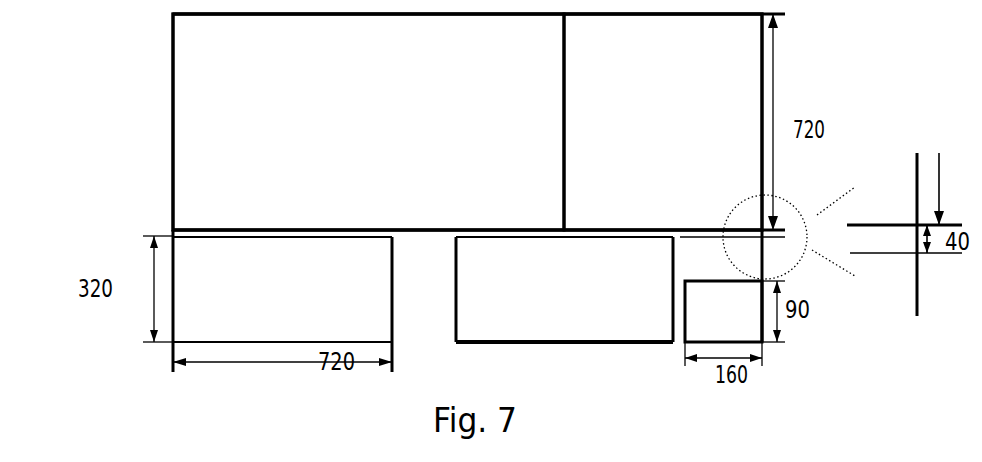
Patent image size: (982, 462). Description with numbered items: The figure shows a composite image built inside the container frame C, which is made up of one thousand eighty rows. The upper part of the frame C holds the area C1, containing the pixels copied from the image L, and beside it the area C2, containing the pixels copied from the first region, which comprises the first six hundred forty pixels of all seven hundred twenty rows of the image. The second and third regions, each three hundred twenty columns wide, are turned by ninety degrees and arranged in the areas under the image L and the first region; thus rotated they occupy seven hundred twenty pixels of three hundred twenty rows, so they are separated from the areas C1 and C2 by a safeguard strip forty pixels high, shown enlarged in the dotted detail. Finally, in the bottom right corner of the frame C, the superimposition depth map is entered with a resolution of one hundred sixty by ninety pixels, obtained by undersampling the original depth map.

The container frame C is at (157, 122).
The area containing pixels copied from the image L C1 is at (200, 166).
The area containing pixels copied from the region R1' C2 is at (746, 108).